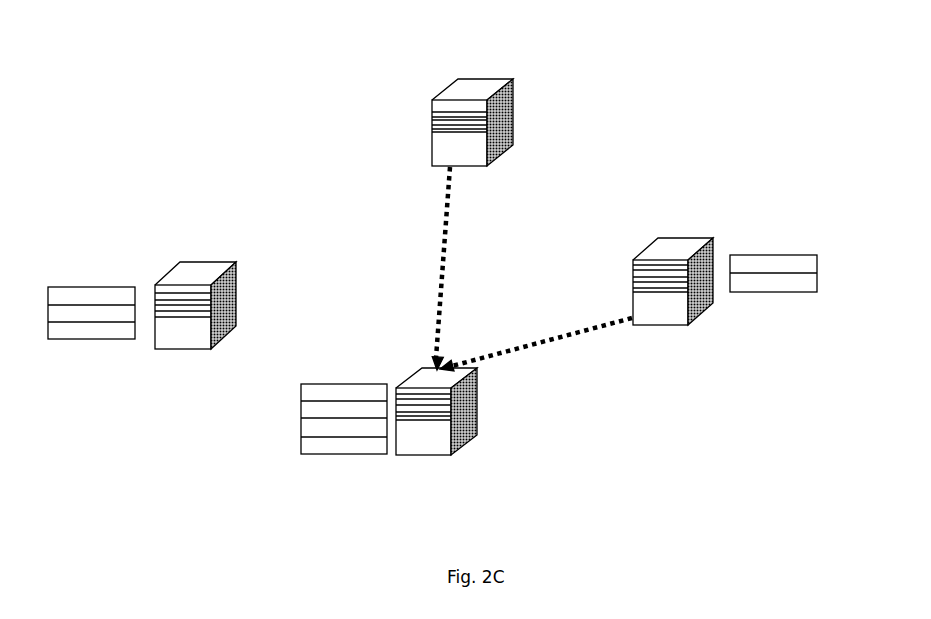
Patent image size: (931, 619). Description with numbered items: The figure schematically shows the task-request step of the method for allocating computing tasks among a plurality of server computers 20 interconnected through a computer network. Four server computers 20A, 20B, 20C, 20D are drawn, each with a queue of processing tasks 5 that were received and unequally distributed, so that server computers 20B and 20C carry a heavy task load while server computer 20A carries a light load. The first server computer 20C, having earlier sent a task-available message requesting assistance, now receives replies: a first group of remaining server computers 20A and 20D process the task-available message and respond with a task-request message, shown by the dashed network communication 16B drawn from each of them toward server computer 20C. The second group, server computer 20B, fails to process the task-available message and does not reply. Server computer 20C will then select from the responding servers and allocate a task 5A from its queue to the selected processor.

The processing tasks 5 is at (112, 358).
The task 5A is at (348, 383).
The dashed network communication 16B is at (438, 310).
The server computers 20 is at (298, 203).
The server computer 20A is at (490, 77).
The server computer 20B is at (197, 349).
The server computer 20C is at (413, 455).
The server computer 20D is at (682, 242).